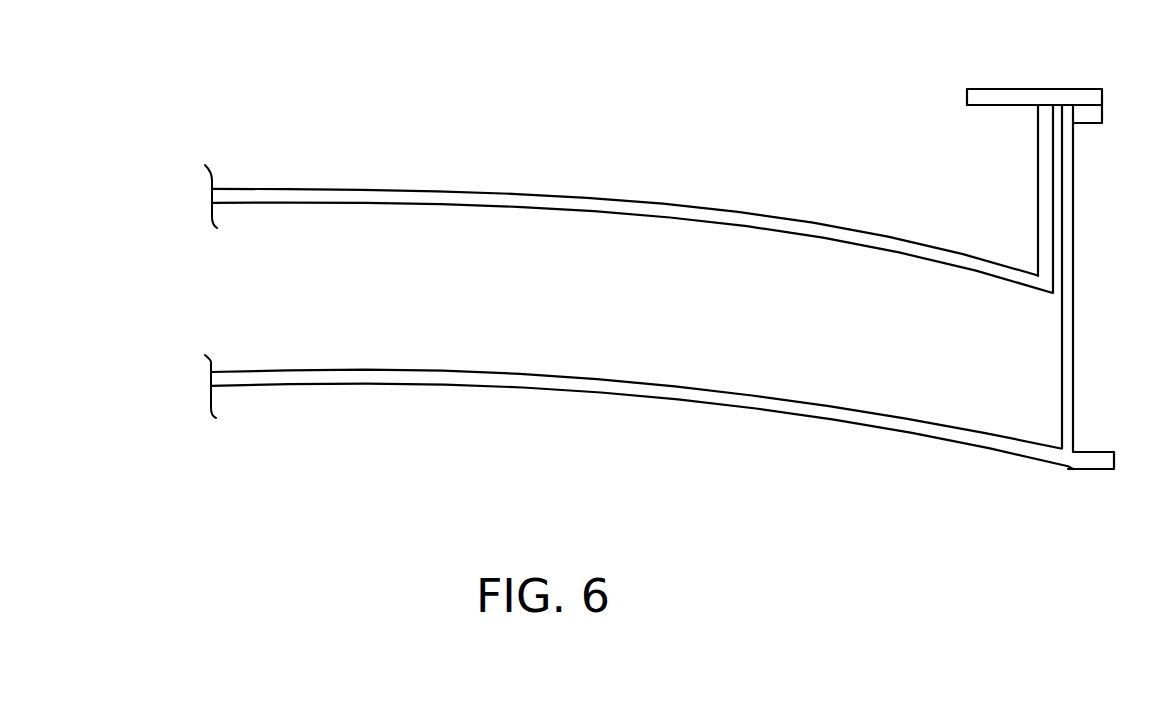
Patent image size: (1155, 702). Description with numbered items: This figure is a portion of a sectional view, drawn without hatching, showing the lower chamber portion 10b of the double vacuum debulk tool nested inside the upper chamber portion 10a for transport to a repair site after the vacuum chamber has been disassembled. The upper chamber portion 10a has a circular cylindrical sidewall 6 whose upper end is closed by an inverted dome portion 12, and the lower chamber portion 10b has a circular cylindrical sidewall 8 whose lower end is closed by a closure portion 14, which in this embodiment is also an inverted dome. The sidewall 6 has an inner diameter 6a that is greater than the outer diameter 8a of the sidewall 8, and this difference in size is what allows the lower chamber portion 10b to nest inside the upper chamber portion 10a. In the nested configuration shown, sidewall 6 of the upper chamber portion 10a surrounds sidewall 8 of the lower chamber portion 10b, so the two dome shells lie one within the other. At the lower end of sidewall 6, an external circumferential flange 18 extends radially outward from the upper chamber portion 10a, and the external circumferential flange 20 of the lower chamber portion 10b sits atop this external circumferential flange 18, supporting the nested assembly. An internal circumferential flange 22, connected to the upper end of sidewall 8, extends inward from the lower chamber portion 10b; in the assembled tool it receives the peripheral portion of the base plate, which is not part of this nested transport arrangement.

The sidewall 6 is at (1073, 357).
The inner diameter 6a is at (1062, 342).
The sidewall 8 is at (1035, 232).
The outer diameter 8a is at (1052, 245).
The upper chamber portion 10a is at (643, 193).
The lower chamber portion 10b is at (666, 376).
The inverted dome portion 12 is at (778, 412).
The closure portion 14 is at (393, 203).
The external circumferential flange 18 is at (1092, 123).
The external circumferential flange 20 is at (1077, 89).
The internal circumferential flange 22 is at (1000, 106).